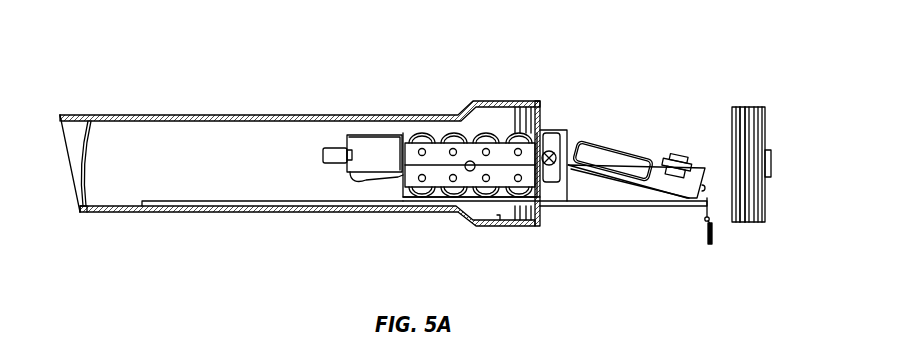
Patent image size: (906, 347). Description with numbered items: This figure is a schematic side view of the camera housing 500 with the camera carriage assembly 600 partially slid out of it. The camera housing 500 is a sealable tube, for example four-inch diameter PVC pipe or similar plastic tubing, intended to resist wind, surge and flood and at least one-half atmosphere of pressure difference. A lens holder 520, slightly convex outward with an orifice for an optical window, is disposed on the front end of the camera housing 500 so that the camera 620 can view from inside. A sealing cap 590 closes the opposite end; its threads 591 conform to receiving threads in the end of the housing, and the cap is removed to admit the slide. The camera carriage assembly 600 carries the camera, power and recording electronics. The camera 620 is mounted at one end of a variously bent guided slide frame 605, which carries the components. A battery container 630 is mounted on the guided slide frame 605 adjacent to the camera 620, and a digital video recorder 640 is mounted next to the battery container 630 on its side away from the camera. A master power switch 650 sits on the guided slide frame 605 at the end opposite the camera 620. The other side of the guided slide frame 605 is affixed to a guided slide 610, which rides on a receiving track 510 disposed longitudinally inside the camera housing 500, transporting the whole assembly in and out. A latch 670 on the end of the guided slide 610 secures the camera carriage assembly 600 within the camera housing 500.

The camera housing 500 is at (243, 115).
The receiving track 510 is at (260, 202).
The lens holder 520 is at (84, 162).
The sealing cap 590 is at (765, 198).
The threads 591 is at (755, 107).
The camera carriage assembly 600 is at (609, 70).
The guided slide frame 605 is at (550, 128).
The guided slide 610 is at (598, 207).
The camera 620 is at (340, 147).
The battery container 630 is at (440, 148).
The digital video recorder 640 is at (602, 140).
The master power switch 650 is at (683, 155).
The latch 670 is at (703, 222).